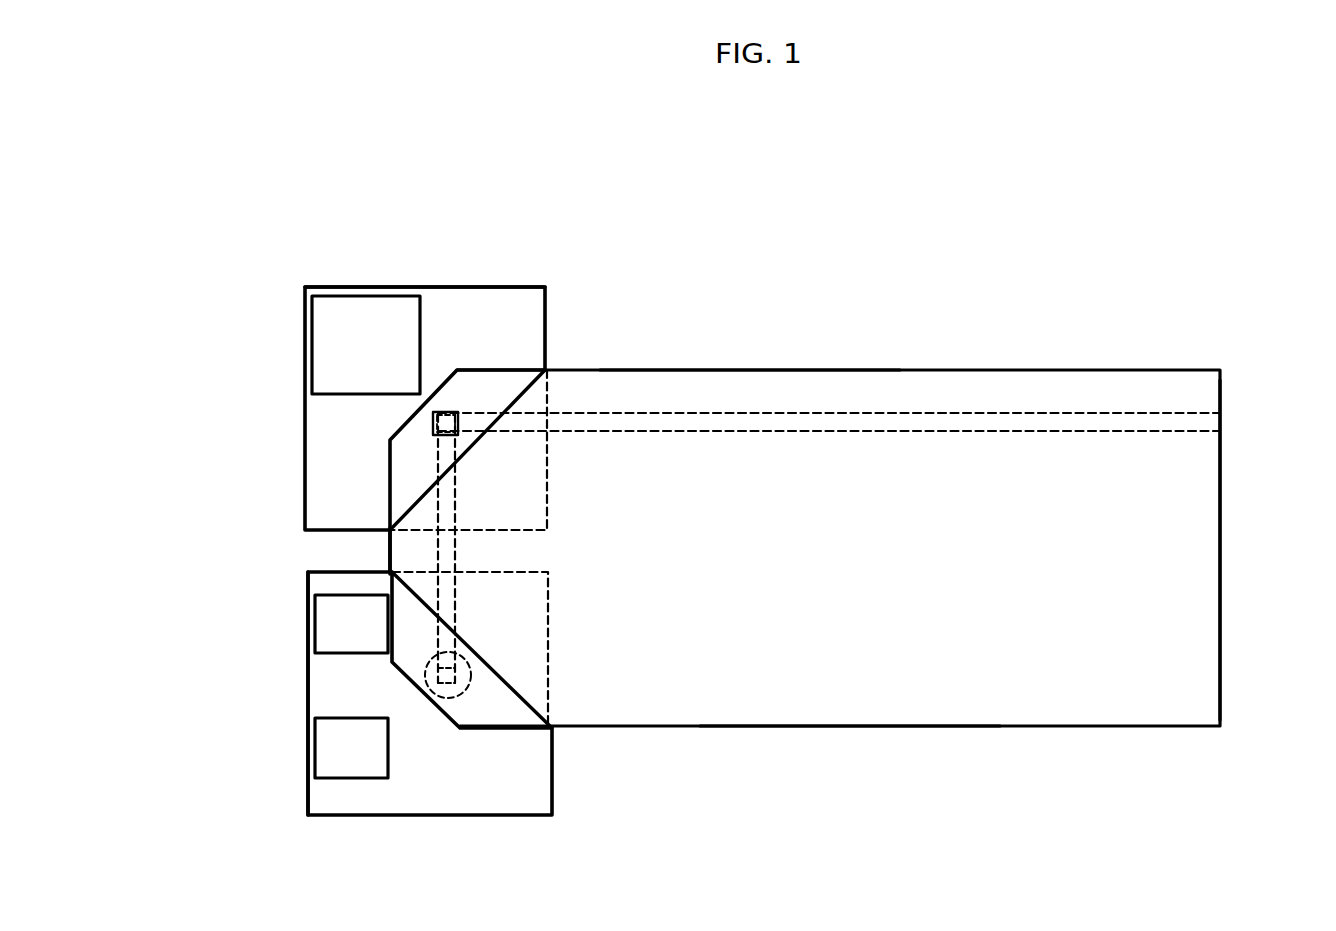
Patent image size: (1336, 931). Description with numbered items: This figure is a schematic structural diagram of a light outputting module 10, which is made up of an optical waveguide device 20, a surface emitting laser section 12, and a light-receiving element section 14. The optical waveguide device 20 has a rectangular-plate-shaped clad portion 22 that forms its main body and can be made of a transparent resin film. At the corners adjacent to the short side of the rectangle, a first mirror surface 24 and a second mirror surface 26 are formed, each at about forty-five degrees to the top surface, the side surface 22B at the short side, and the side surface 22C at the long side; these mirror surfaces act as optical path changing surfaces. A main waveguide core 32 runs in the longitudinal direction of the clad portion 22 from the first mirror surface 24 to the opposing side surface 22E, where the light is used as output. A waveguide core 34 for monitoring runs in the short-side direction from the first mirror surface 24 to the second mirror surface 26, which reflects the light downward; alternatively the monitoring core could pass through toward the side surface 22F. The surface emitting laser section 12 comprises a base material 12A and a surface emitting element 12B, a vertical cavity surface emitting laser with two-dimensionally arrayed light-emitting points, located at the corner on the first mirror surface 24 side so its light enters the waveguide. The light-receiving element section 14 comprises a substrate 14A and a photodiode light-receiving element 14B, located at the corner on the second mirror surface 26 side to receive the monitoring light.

The light outputting module 10 is at (178, 222).
The surface emitting laser section 12 is at (444, 284).
The base material 12A is at (508, 287).
The surface emitting element 12B is at (450, 412).
The light-receiving element section 14 is at (401, 818).
The substrate 14A is at (308, 685).
The light-receiving element 14B is at (443, 698).
The optical waveguide device 20 is at (843, 354).
The clad portion 22 is at (1034, 364).
The side surface at the short side 22B is at (390, 557).
The side surface at the long side 22C is at (730, 369).
The side surface 22E is at (1220, 525).
The side surface 22F is at (822, 726).
The first mirror surface 24 is at (413, 440).
The second mirror surface 26 is at (490, 710).
The main waveguide core 32 is at (907, 433).
The waveguide core for monitoring 34 is at (455, 498).